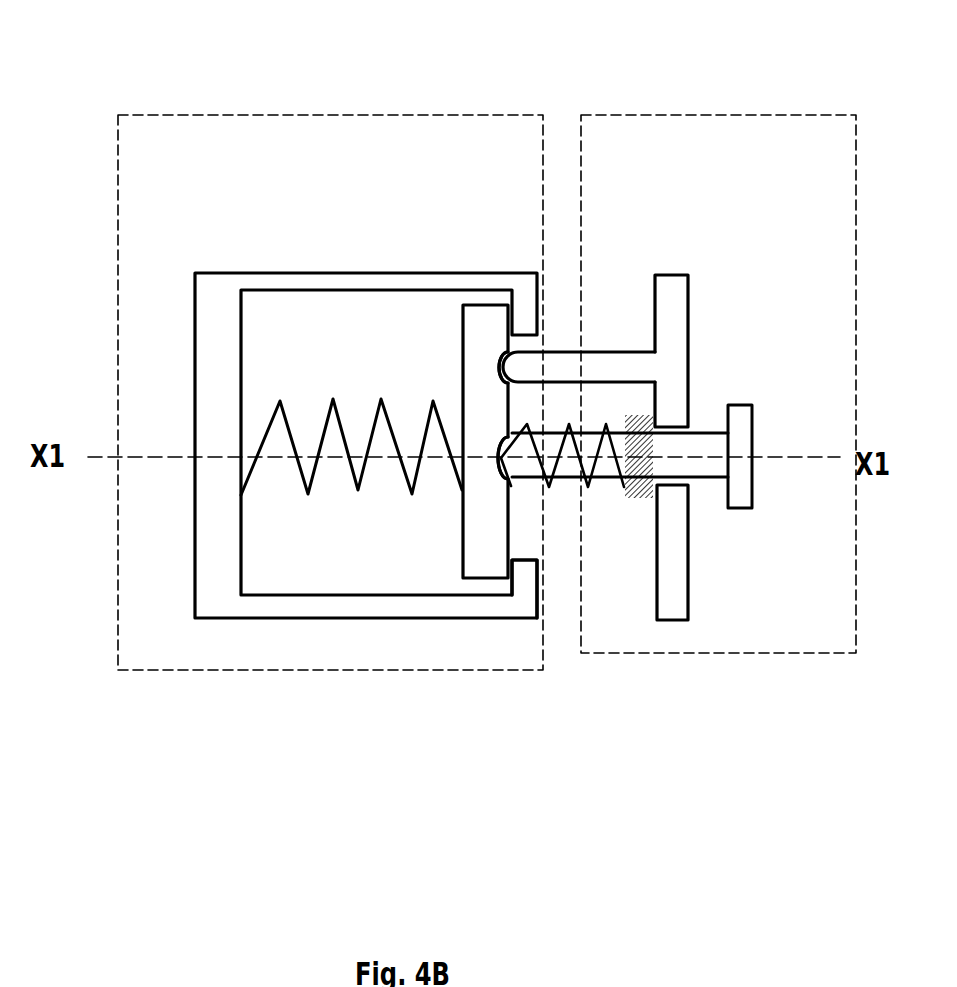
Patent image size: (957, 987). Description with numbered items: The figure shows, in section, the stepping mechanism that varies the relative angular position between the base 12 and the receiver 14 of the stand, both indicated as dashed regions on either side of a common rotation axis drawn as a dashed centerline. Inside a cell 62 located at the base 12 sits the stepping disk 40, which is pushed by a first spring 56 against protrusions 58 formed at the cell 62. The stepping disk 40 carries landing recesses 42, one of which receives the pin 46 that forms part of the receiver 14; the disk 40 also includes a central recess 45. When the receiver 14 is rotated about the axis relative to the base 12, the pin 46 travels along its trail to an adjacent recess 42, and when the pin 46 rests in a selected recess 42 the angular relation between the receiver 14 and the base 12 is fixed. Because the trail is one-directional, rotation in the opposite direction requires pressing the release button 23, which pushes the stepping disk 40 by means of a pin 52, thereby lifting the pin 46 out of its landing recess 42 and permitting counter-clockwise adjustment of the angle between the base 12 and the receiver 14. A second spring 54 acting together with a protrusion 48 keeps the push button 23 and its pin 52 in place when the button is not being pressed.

The base 12 is at (275, 115).
The receiver 14 is at (697, 115).
The cell 62 is at (272, 330).
The protrusions 58 is at (520, 597).
The first spring 56 is at (297, 463).
The stepping disk 40 is at (488, 317).
The landing recesses 42 is at (500, 365).
The central recess 45 is at (497, 472).
The pin 46 is at (630, 362).
The pin 52 is at (688, 445).
The second spring 54 is at (615, 430).
The protrusion 48 is at (640, 478).
The release button 23 is at (740, 488).